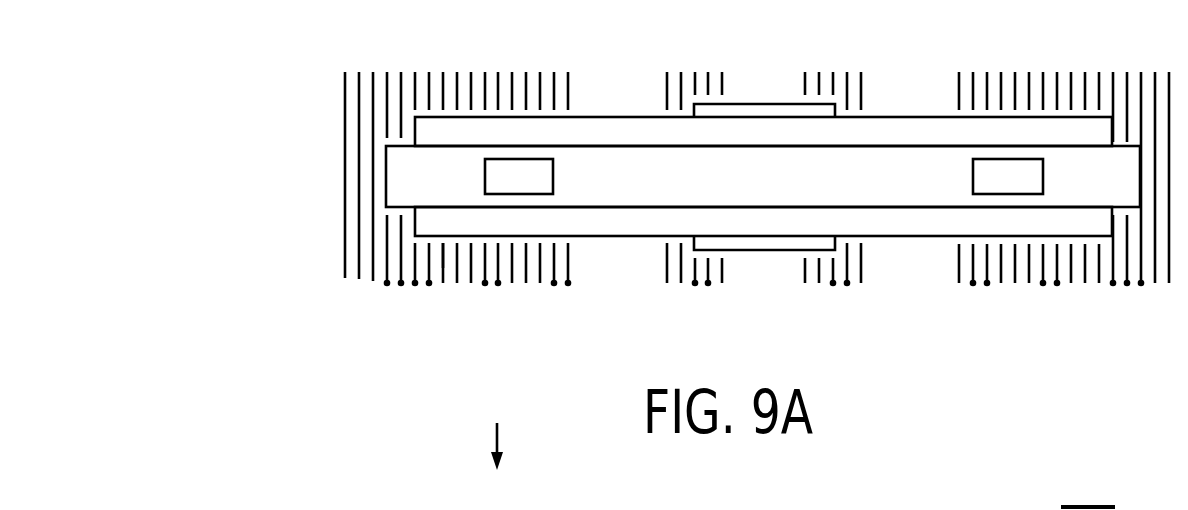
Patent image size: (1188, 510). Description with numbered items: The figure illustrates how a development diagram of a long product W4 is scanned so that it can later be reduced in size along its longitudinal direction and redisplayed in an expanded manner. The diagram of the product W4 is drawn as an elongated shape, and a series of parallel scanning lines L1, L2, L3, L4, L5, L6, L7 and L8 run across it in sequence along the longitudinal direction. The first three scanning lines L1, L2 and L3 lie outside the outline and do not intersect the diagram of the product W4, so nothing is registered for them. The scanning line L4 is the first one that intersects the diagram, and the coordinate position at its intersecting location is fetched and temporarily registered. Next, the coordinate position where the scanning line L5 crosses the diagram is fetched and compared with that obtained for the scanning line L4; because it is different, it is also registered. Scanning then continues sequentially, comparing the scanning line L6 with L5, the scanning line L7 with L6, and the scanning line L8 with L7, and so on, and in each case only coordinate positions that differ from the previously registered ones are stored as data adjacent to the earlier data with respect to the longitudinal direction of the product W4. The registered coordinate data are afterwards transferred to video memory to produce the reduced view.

The long product W4 is at (918, 108).
The scanning line L1 is at (345, 278).
The scanning line L2 is at (359, 279).
The scanning line L3 is at (373, 281).
The scanning line L4 is at (387, 283).
The scanning line L5 is at (401, 283).
The scanning line L6 is at (415, 283).
The scanning line L7 is at (429, 283).
The scanning line L8 is at (443, 268).